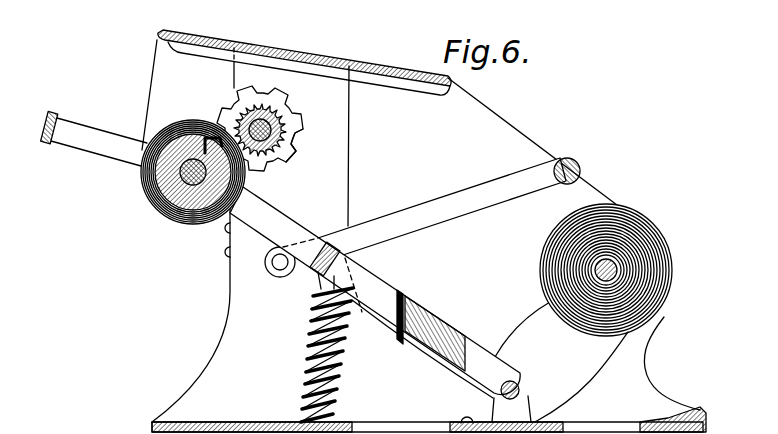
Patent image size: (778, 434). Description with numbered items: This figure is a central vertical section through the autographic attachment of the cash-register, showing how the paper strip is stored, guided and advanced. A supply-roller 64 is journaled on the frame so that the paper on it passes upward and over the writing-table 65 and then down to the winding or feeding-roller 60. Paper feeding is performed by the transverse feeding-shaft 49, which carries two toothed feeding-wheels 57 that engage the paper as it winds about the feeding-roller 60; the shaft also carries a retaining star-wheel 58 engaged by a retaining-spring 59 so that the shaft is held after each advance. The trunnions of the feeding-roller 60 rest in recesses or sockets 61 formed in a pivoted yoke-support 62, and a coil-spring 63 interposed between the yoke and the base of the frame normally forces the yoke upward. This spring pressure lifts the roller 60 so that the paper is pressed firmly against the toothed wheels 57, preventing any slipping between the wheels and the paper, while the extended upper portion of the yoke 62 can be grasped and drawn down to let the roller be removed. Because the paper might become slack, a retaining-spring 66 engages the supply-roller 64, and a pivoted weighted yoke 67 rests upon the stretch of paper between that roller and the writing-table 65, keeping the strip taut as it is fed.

The feeding-shaft 49 is at (272, 120).
The toothed feeding-wheels 57 is at (242, 106).
The retaining star-wheel 58 is at (296, 150).
The retaining-spring 59 is at (228, 223).
The feeding-roller 60 is at (187, 178).
The recesses or sockets 61 is at (197, 160).
The yoke-support 62 is at (82, 148).
The coil-spring 63 is at (305, 338).
The supply-roller 64 is at (609, 269).
The writing-table 65 is at (350, 66).
The retaining-spring 66 is at (597, 372).
The weighted yoke 67 is at (446, 205).